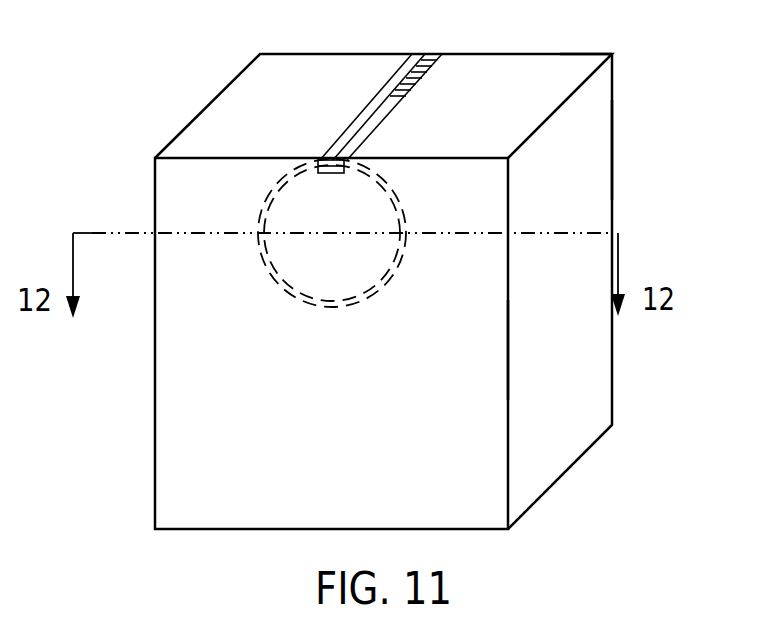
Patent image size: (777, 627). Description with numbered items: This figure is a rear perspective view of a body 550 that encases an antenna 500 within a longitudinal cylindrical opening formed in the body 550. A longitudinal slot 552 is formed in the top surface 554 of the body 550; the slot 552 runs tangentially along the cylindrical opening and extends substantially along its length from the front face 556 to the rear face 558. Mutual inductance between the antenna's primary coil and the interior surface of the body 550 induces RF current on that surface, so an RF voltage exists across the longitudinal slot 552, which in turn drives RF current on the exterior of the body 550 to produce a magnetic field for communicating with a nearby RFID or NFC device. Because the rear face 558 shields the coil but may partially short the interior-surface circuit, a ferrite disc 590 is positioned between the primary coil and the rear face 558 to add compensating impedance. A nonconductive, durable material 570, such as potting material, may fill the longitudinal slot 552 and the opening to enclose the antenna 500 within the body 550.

The antenna 500 is at (436, 48).
The body 550 is at (593, 217).
The longitudinal slot 552 is at (373, 132).
The top surface 554 is at (573, 77).
The front face 556 is at (612, 148).
The rear face 558 is at (482, 332).
The nonconductive, durable material 570 is at (373, 109).
The ferrite disc 590 is at (407, 223).